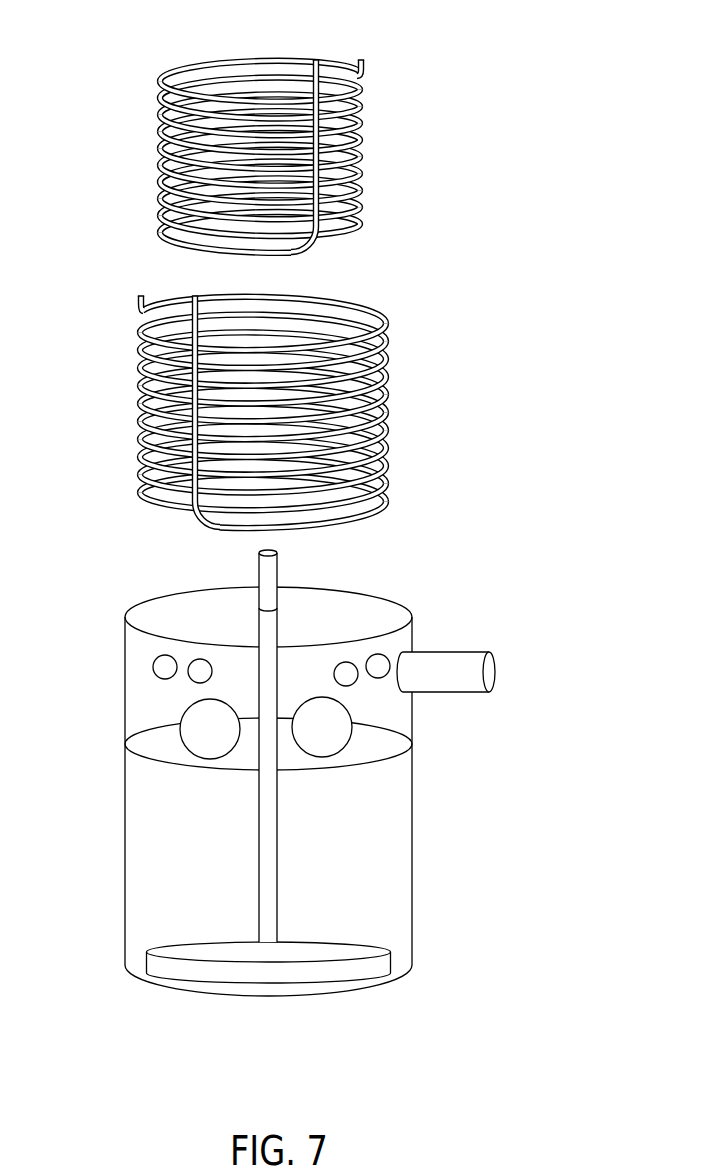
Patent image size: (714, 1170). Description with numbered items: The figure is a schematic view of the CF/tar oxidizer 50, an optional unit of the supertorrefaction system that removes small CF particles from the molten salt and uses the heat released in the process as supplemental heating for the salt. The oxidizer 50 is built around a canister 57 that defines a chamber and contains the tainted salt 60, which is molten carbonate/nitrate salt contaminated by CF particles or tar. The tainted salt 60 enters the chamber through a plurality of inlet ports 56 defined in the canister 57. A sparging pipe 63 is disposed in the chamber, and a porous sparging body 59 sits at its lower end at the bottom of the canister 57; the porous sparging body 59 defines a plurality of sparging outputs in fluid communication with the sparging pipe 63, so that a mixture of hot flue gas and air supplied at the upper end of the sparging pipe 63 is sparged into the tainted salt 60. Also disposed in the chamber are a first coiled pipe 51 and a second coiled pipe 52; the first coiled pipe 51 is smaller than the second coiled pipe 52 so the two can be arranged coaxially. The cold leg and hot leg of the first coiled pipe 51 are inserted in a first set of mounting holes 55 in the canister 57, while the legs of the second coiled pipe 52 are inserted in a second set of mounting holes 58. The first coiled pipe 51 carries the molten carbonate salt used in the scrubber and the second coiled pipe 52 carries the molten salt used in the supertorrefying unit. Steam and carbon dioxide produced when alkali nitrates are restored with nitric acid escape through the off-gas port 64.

The CF/tar oxidizer 50 is at (320, 505).
The first coiled pipe 51 is at (367, 162).
The second coiled pipe 52 is at (391, 422).
The first set of mounting holes 55 is at (358, 657).
The inlet ports 56 is at (181, 740).
The canister 57 is at (418, 864).
The second set of mounting holes 58 is at (190, 657).
The porous sparging body 59 is at (393, 950).
The tainted salt 60 is at (150, 863).
The sparging pipe 63 is at (284, 573).
The off-gas port 64 is at (496, 667).